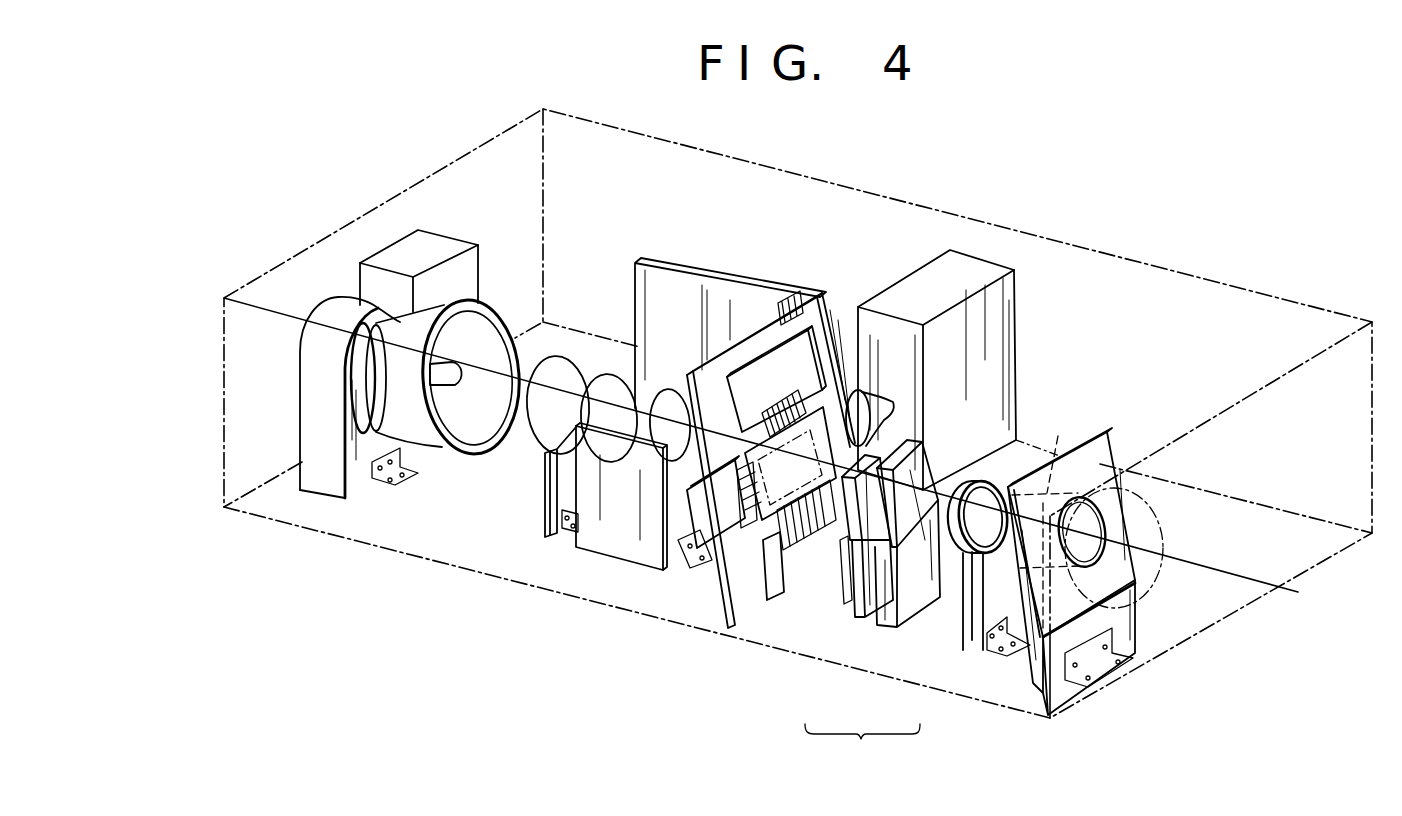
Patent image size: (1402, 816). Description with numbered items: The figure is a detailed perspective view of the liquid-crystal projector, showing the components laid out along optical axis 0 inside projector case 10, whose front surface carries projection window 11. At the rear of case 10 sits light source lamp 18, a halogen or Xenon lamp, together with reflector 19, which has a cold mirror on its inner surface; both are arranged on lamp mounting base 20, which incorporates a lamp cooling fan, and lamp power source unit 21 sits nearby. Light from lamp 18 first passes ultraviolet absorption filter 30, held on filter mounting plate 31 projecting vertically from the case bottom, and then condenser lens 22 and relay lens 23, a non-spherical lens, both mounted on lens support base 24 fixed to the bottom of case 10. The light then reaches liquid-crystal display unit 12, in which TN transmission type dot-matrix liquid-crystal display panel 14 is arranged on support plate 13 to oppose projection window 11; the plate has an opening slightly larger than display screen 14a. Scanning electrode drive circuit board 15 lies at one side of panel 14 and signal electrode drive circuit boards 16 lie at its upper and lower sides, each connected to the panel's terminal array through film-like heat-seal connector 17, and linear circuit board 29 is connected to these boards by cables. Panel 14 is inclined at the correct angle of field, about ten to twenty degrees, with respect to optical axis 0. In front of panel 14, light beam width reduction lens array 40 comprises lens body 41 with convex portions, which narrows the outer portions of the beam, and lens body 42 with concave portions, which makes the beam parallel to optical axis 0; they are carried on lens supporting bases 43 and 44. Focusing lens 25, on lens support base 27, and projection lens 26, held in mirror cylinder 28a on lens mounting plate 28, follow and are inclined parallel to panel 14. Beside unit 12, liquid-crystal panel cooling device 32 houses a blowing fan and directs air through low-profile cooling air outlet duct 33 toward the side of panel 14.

The projector case 10 is at (880, 196).
The optical axis 0 is at (1235, 562).
The projection window 11 is at (1160, 543).
The liquid-crystal display unit 12 is at (826, 290).
The support plate 13 is at (748, 352).
The liquid-crystal display panel 14 is at (760, 522).
The display screen 14a is at (792, 588).
The scanning electrode drive circuit board 15 is at (708, 564).
The signal electrode drive circuit board 16 is at (795, 320).
The heat-seal connector 17 is at (793, 390).
The light source lamp 18 is at (460, 373).
The reflector 19 is at (442, 452).
The lamp mounting base 20 is at (368, 485).
The lamp power source unit 21 is at (452, 243).
The condenser lens 22 is at (613, 386).
The relay lens 23 is at (673, 392).
The lens support base 24 is at (600, 553).
The focusing lens 25 is at (978, 490).
The projection lens 26 is at (1066, 537).
The lens support base 27 is at (980, 620).
The lens mounting plate 28 is at (1128, 568).
The mirror cylinder 28a is at (1064, 455).
The linear circuit board 29 is at (674, 276).
The ultraviolet absorption filter 30 is at (552, 368).
The filter mounting plate 31 is at (543, 494).
The liquid-crystal panel cooling device 32 is at (1015, 297).
The cooling air outlet duct 33 is at (865, 392).
The light beam width reduction lens array 40 is at (862, 743).
The lens body 41 is at (847, 602).
The lens body 42 is at (912, 562).
The lens supporting base 43 is at (870, 608).
The lens supporting base 44 is at (890, 622).